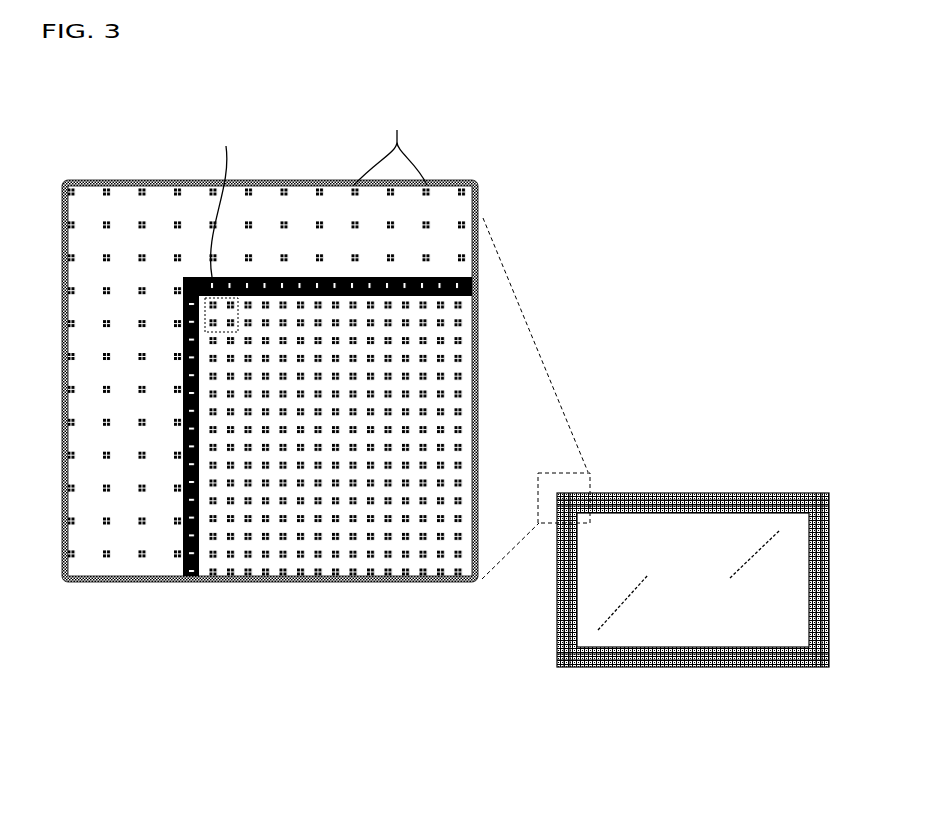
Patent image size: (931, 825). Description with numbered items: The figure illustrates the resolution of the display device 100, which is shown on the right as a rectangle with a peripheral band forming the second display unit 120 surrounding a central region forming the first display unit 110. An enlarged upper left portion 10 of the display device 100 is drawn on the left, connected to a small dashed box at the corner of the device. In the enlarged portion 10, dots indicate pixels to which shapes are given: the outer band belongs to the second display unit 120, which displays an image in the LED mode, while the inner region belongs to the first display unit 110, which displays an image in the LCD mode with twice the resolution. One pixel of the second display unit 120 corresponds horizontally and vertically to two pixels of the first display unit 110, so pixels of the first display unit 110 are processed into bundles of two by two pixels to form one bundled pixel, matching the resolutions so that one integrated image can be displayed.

The enlarged upper left portion 10 is at (445, 410).
The display device 100 is at (739, 472).
The first display unit 110 is at (450, 513).
The second display unit 120 is at (341, 185).